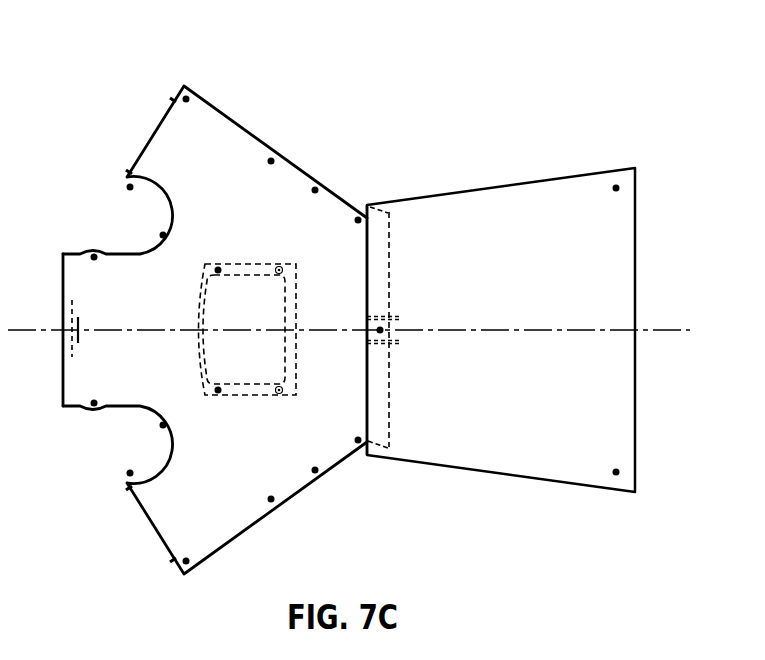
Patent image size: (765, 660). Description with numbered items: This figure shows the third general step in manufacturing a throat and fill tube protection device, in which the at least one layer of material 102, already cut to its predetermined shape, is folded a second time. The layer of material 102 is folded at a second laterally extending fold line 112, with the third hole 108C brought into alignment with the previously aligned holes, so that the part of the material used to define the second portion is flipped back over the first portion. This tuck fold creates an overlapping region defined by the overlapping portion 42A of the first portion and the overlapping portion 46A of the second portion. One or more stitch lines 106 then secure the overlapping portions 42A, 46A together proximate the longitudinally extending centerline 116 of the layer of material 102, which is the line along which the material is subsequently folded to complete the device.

The layer of material 102 is at (582, 53).
The stitch line 106 is at (377, 305).
The second laterally extending fold line 112 is at (367, 255).
The third hole 108C is at (382, 331).
The overlapping portion of the first portion 42A is at (378, 237).
The overlapping portion of the second portion 46A is at (377, 287).
The longitudinally extending centerline 116 is at (652, 331).